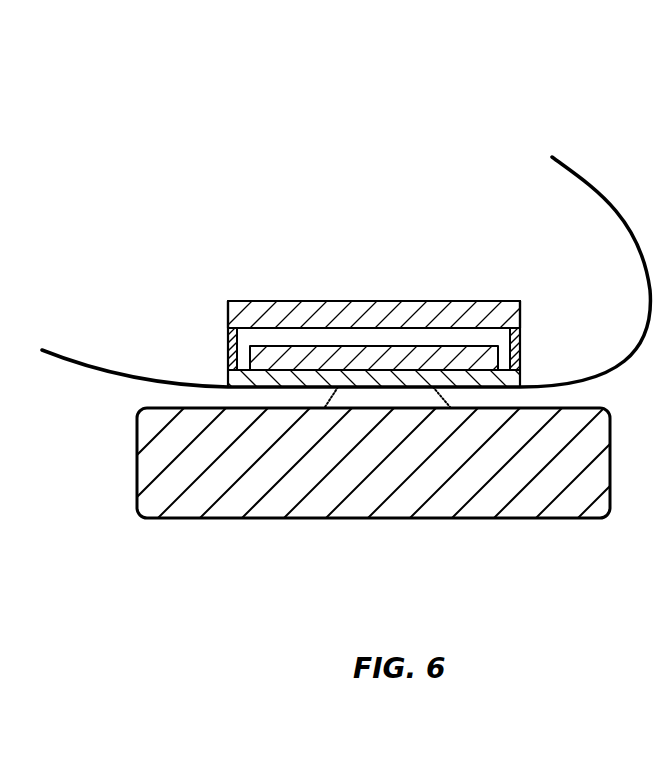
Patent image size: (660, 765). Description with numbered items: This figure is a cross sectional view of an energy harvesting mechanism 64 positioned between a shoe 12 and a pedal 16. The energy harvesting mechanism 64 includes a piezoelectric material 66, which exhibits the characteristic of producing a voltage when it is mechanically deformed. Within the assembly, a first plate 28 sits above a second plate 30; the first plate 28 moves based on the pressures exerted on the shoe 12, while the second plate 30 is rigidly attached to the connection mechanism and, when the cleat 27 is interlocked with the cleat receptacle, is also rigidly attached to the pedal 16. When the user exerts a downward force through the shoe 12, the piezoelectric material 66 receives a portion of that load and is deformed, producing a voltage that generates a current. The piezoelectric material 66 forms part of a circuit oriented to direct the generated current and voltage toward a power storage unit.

The shoe 12 is at (587, 150).
The pedal 16 is at (531, 505).
The cleat 27 is at (373, 400).
The first plate 28 is at (505, 310).
The second plate 30 is at (487, 360).
The energy harvesting mechanism 64 is at (208, 312).
The piezoelectric material 66 is at (227, 353).